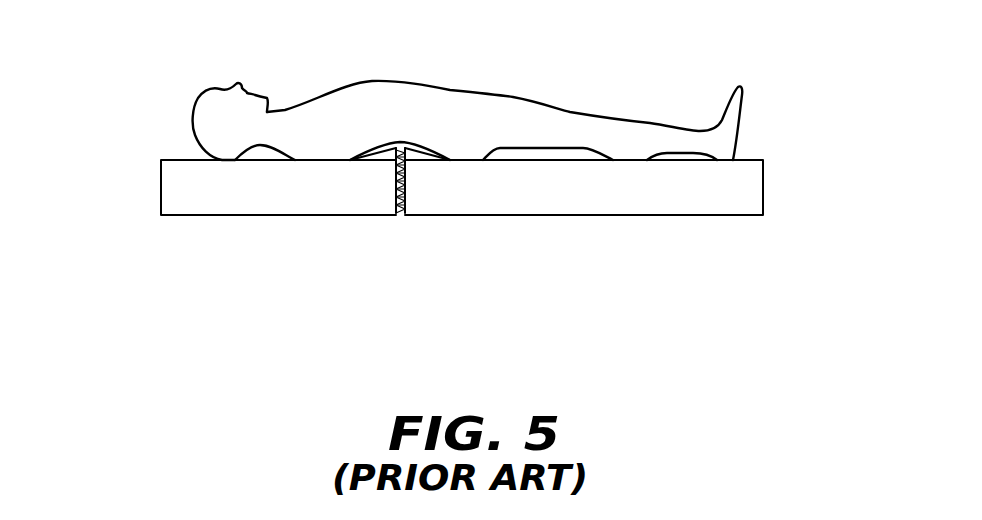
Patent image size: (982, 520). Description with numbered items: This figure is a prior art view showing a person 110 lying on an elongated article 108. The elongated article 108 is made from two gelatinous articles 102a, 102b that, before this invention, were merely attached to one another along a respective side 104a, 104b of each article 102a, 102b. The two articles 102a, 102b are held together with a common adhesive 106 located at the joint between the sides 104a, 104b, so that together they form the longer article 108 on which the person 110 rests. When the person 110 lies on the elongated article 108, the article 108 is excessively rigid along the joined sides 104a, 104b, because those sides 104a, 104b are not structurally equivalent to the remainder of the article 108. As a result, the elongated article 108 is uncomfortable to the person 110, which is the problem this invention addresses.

The person 110 is at (352, 90).
The elongated article 108 is at (461, 245).
The article 102a is at (763, 190).
The article 102b is at (161, 192).
The side 104a is at (413, 197).
The side 104b is at (395, 200).
The adhesive 106 is at (398, 215).